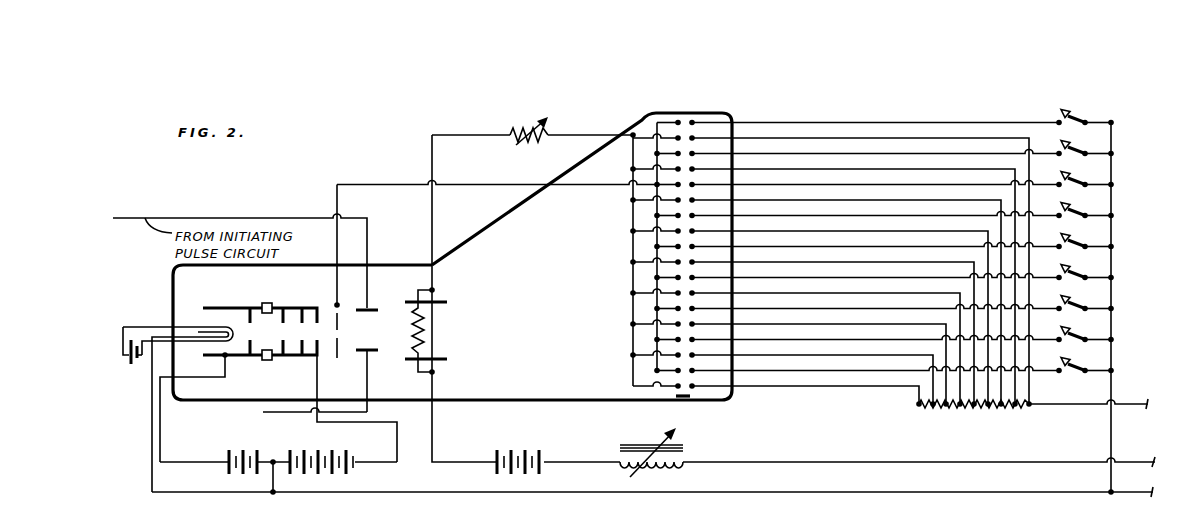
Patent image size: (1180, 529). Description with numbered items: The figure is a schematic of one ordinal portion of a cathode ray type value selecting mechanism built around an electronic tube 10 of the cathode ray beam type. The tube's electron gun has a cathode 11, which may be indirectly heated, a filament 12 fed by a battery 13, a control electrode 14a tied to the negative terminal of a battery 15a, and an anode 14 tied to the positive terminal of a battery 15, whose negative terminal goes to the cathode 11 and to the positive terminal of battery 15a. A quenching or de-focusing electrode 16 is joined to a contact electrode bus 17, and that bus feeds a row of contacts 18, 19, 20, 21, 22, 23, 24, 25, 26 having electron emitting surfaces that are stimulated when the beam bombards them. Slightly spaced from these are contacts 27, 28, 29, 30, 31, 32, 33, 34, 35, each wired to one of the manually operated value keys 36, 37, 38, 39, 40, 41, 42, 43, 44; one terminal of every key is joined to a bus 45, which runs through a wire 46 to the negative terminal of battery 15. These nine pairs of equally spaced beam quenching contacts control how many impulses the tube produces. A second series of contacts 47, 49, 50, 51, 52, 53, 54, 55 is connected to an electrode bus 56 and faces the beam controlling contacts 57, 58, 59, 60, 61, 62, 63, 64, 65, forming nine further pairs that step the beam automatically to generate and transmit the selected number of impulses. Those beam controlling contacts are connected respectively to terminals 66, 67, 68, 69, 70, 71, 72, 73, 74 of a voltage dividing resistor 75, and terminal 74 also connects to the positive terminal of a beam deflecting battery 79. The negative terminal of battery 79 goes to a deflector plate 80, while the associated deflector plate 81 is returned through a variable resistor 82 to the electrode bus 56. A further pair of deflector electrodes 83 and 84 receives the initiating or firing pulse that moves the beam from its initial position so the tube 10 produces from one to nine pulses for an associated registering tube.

The electronic tube 10 is at (520, 405).
The cathode 11 is at (230, 324).
The filament 12 is at (187, 318).
The battery 13 is at (135, 366).
The anode 14 is at (288, 307).
The control electrode 14a is at (216, 308).
The battery 15 is at (348, 472).
The battery 15a is at (246, 449).
The quenching or de-focusing electrode 16 is at (339, 304).
The contact electrode bus 17 is at (650, 125).
The contact 18 is at (631, 356).
The contact 19 is at (675, 340).
The contact 20 is at (675, 309).
The contact 21 is at (675, 278).
The contact 22 is at (675, 247).
The contact 23 is at (675, 216).
The contact 24 is at (675, 185).
The contact 25 is at (675, 152).
The contact 26 is at (677, 121).
The contact 27 is at (874, 366).
The contact 28 is at (874, 335).
The contact 29 is at (874, 304).
The contact 30 is at (874, 273).
The contact 31 is at (874, 242).
The contact 32 is at (874, 211).
The contact 33 is at (874, 180).
The contact 34 is at (874, 149).
The contact 35 is at (706, 114).
The value key 36 is at (1092, 370).
The value key 37 is at (1092, 339).
The value key 38 is at (1092, 308).
The value key 39 is at (1092, 277).
The value key 40 is at (1092, 246).
The value key 41 is at (1092, 215).
The value key 42 is at (1092, 184).
The value key 43 is at (1092, 153).
The value key 44 is at (1082, 121).
The bus 45 is at (1113, 224).
The wire 46 is at (1012, 494).
The contact 47 is at (660, 389).
The contact 49 is at (631, 325).
The contact 50 is at (631, 294).
The contact 51 is at (631, 263).
The contact 52 is at (631, 232).
The contact 53 is at (631, 201).
The contact 54 is at (631, 169).
The contact 55 is at (692, 121).
The electrode bus 56 is at (632, 238).
The beam controlling contact 57 is at (804, 388).
The beam controlling contact 58 is at (811, 373).
The beam controlling contact 59 is at (817, 357).
The beam controlling contact 60 is at (824, 342).
The beam controlling contact 61 is at (831, 326).
The beam controlling contact 62 is at (838, 311).
The beam controlling contact 63 is at (845, 295).
The beam controlling contact 64 is at (852, 280).
The beam controlling contact 65 is at (859, 264).
The terminal 66 is at (917, 405).
The terminal 67 is at (931, 407).
The terminal 68 is at (945, 408).
The terminal 69 is at (959, 408).
The terminal 70 is at (973, 408).
The terminal 71 is at (987, 408).
The terminal 72 is at (1000, 408).
The terminal 73 is at (1015, 408).
The terminal 74 is at (1030, 405).
The voltage dividing resistor 75 is at (973, 410).
The cathode ray beam deflecting battery 79 is at (524, 449).
The deflector plate 80 is at (452, 366).
The deflector plate 81 is at (442, 304).
The variable resistor 82 is at (520, 128).
The deflector electrode 83 is at (378, 352).
The deflector electrode 84 is at (368, 308).